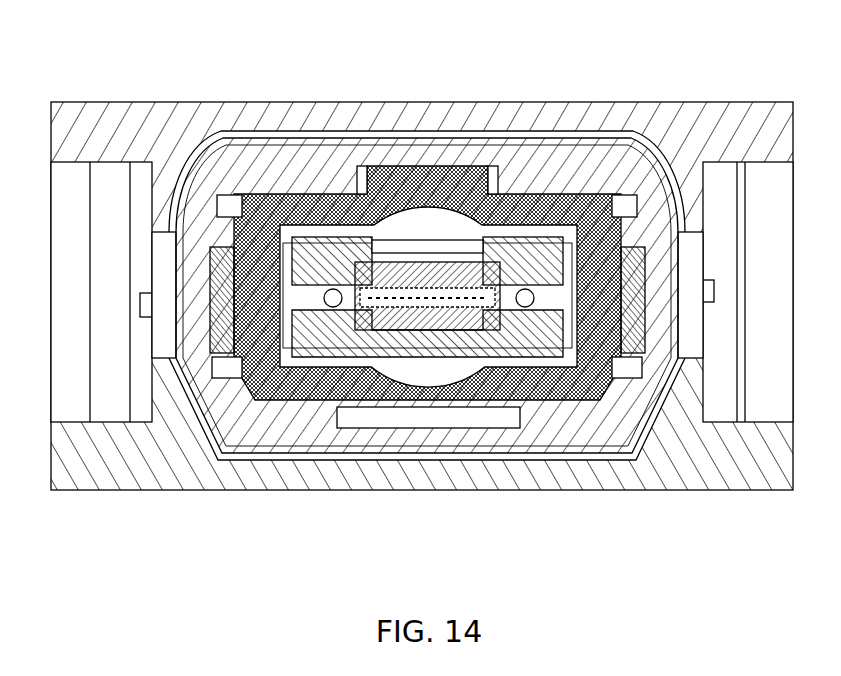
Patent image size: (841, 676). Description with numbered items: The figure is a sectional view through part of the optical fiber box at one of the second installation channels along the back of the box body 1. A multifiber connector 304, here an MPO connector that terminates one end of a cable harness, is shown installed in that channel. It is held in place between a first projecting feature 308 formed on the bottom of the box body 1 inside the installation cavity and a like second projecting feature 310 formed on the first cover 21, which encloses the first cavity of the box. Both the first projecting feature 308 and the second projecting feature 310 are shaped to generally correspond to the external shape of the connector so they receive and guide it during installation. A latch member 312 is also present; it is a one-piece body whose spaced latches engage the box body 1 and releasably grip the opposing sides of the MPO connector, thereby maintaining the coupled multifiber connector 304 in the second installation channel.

The box body 1 is at (322, 471).
The first cover 21 is at (458, 115).
The multifiber connector 304 is at (594, 167).
The first projecting feature 308 is at (685, 407).
The second projecting feature 310 is at (167, 190).
The latch member 312 is at (637, 288).